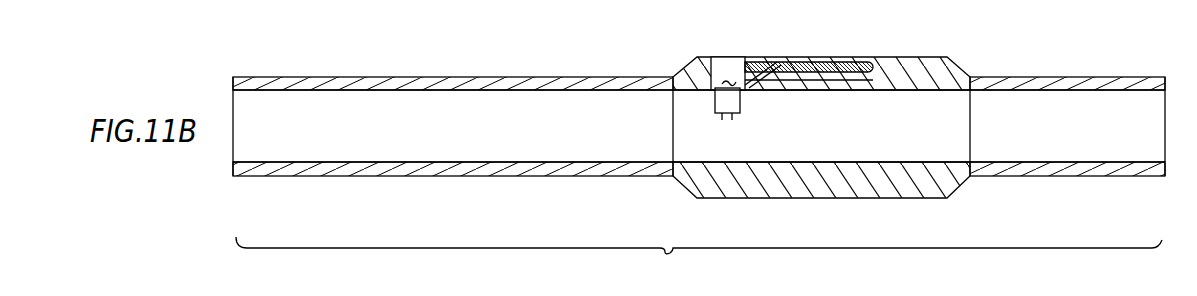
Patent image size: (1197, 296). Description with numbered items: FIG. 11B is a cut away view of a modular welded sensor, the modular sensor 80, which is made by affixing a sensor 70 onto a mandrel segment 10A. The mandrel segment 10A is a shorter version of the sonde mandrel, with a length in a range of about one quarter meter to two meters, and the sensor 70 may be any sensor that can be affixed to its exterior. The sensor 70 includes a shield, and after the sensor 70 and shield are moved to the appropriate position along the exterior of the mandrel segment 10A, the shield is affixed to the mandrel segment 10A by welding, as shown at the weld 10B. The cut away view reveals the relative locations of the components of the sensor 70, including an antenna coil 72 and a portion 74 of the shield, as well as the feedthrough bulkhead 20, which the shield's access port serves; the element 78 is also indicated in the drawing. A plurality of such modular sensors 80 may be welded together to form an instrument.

The mandrel segment 10A is at (333, 177).
The weld 10B is at (693, 88).
The feedthrough bulkhead 20 is at (742, 100).
The sensor 70 is at (732, 192).
The antenna coil 72 is at (827, 91).
The portion of the shield 74 is at (853, 57).
The pocket 78 is at (723, 62).
The modular sensor 80 is at (668, 256).